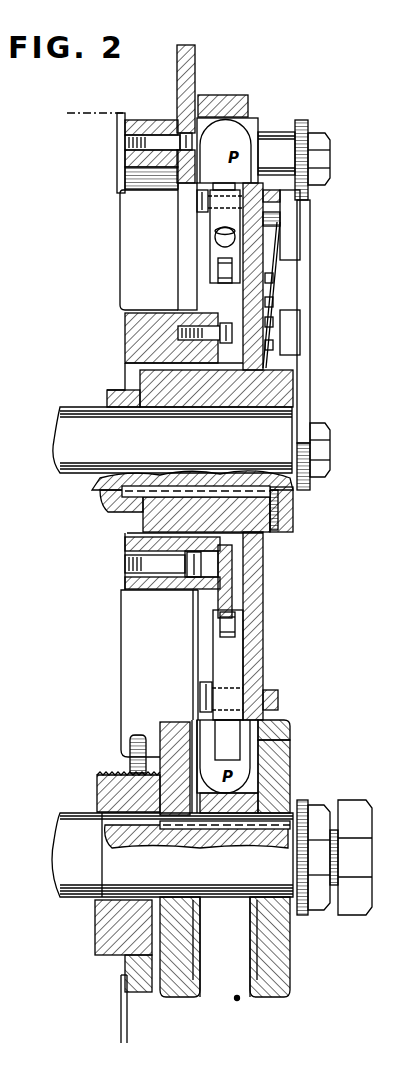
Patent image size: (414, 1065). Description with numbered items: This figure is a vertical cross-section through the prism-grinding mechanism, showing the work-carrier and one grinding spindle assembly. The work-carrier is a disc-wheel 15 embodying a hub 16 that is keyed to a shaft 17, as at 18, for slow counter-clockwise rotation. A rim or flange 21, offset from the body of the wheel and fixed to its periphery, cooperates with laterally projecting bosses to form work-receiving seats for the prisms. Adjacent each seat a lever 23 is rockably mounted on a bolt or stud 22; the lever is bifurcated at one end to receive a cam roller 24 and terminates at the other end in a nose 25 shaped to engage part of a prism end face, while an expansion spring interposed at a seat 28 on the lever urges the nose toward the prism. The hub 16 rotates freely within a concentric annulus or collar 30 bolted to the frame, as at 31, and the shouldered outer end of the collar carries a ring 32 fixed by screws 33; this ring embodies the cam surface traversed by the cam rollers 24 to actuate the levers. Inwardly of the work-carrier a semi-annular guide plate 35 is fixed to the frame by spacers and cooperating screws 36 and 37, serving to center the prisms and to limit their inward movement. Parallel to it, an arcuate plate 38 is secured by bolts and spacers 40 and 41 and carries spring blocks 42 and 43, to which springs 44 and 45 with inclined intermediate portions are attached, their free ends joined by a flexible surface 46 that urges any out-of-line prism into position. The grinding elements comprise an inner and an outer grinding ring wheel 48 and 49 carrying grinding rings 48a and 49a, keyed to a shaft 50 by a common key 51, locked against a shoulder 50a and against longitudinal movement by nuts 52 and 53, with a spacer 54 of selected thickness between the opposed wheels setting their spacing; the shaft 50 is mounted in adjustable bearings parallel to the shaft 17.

The disc-wheel 15 is at (263, 614).
The hub 16 is at (282, 393).
The shaft 17 is at (172, 440).
The key 18 is at (105, 503).
The rim or flange 21 is at (225, 106).
The bolt or stud 22 is at (197, 200).
The lever 23 is at (210, 240).
The cam roller 24 is at (218, 272).
The nose 25 is at (232, 750).
The seat 28 is at (215, 236).
The annulus or collar 30 is at (128, 337).
The bolt 31 is at (172, 570).
The ring 32 is at (233, 578).
The screws 33 is at (186, 326).
The semi-annular guide plate 35 is at (178, 72).
The spacer 36 is at (152, 121).
The screw 37 is at (162, 143).
The arcuate plate 38 is at (310, 230).
The bolt 40 is at (324, 160).
The spacer 41 is at (273, 133).
The spring block 42 is at (292, 212).
The spring block 43 is at (290, 323).
The spring 44 is at (278, 252).
The spring 45 is at (273, 366).
The flexible surface 46 is at (270, 310).
The inner grinding ring wheel 48 is at (175, 790).
The grinding ring 48a is at (178, 724).
The outer grinding ring wheel 49 is at (290, 766).
The grinding ring 49a is at (290, 731).
The shaft 50 is at (172, 855).
The shoulder 50a is at (90, 900).
The key 51 is at (272, 828).
The nut 52 is at (320, 913).
The nut 53 is at (370, 912).
The spacer 54 is at (203, 902).